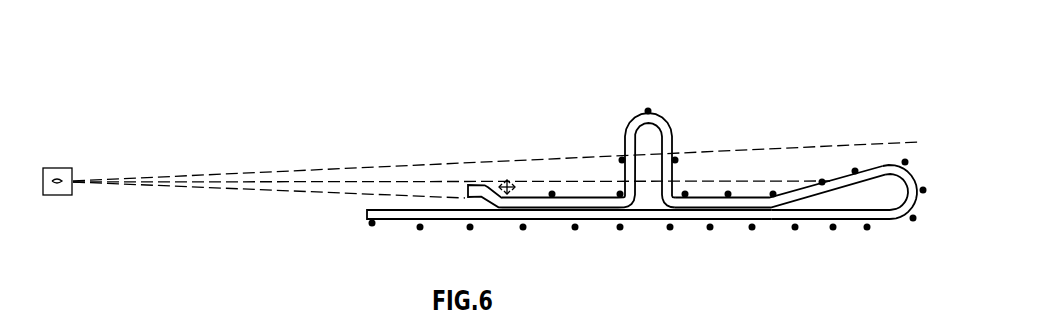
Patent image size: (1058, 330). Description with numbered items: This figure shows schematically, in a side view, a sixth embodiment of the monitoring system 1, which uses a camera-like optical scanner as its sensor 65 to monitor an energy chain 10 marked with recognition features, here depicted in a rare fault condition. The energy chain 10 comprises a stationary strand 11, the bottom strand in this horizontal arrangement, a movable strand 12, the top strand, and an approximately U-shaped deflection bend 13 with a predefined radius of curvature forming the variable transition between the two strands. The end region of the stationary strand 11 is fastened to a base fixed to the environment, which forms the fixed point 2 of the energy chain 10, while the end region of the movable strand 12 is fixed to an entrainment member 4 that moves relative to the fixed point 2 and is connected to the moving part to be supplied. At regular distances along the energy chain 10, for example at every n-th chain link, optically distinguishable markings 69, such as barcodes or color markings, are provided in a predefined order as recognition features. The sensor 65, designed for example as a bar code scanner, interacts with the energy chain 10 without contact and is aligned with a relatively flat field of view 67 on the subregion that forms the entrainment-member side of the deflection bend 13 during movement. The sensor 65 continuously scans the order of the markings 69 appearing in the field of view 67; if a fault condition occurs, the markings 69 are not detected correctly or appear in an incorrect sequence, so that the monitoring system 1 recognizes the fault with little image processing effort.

The monitoring system 1 is at (902, 65).
The fixed point 2 is at (366, 223).
The entrainment member 4 is at (483, 182).
The energy chain 10 is at (442, 215).
The stationary strand 11 is at (865, 210).
The movable strand 12 is at (742, 196).
The deflection bend 13 is at (918, 168).
The sensor 65 is at (62, 170).
The field of view 67 is at (287, 170).
The markings 69 is at (620, 158).